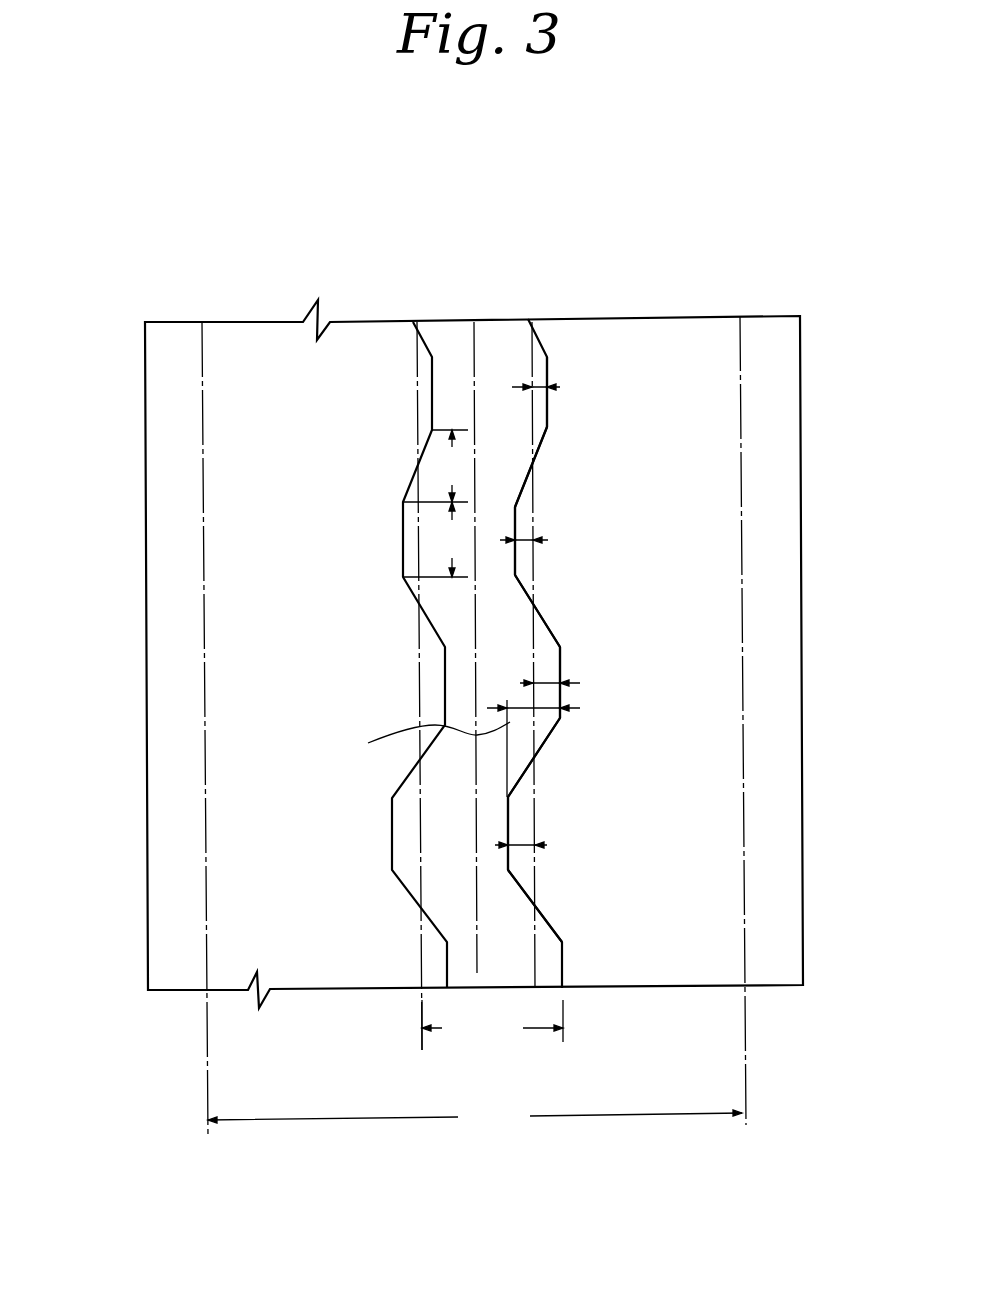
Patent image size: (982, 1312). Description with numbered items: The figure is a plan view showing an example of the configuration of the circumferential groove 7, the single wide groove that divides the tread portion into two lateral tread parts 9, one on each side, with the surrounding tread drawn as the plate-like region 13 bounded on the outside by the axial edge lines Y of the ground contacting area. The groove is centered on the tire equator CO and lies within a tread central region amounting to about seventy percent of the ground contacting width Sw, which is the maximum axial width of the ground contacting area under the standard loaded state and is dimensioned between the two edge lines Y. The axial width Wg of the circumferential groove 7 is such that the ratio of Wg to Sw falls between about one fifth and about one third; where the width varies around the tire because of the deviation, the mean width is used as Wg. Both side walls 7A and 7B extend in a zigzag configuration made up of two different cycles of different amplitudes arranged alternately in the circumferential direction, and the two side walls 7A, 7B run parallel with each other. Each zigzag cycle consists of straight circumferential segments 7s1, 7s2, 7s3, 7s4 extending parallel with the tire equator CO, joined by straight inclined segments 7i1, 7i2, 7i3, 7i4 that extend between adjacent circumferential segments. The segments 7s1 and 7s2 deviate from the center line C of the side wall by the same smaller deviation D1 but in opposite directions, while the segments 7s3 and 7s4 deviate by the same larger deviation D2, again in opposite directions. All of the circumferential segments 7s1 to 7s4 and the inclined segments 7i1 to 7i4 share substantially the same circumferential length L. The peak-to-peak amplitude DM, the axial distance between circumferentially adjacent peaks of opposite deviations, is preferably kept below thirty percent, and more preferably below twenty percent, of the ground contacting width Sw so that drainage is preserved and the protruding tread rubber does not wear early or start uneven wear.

The circumferential groove 7 is at (450, 340).
The side wall 7A is at (562, 955).
The side wall 7B is at (447, 955).
The straight circumferential segment 7s1 is at (547, 367).
The straight circumferential segment 7s2 is at (515, 507).
The straight circumferential segment 7s3 is at (560, 647).
The straight circumferential segment 7s4 is at (508, 812).
The inclined segment 7i1 is at (533, 457).
The inclined segment 7i2 is at (535, 605).
The inclined segment 7i3 is at (535, 757).
The inclined segment 7i4 is at (535, 907).
The lateral tread part 9 is at (322, 938).
The plate 13 is at (148, 937).
The center line C is at (418, 363).
The tire equator CO is at (476, 355).
The axial edge line Y is at (202, 370).
The peak-to-peak amplitude DM is at (411, 745).
The circumferential length L is at (435, 503).
The deviation D1 is at (547, 390).
The deviation D2 is at (556, 688).
The axial width Wg is at (492, 1026).
The ground contacting width Sw is at (475, 1116).